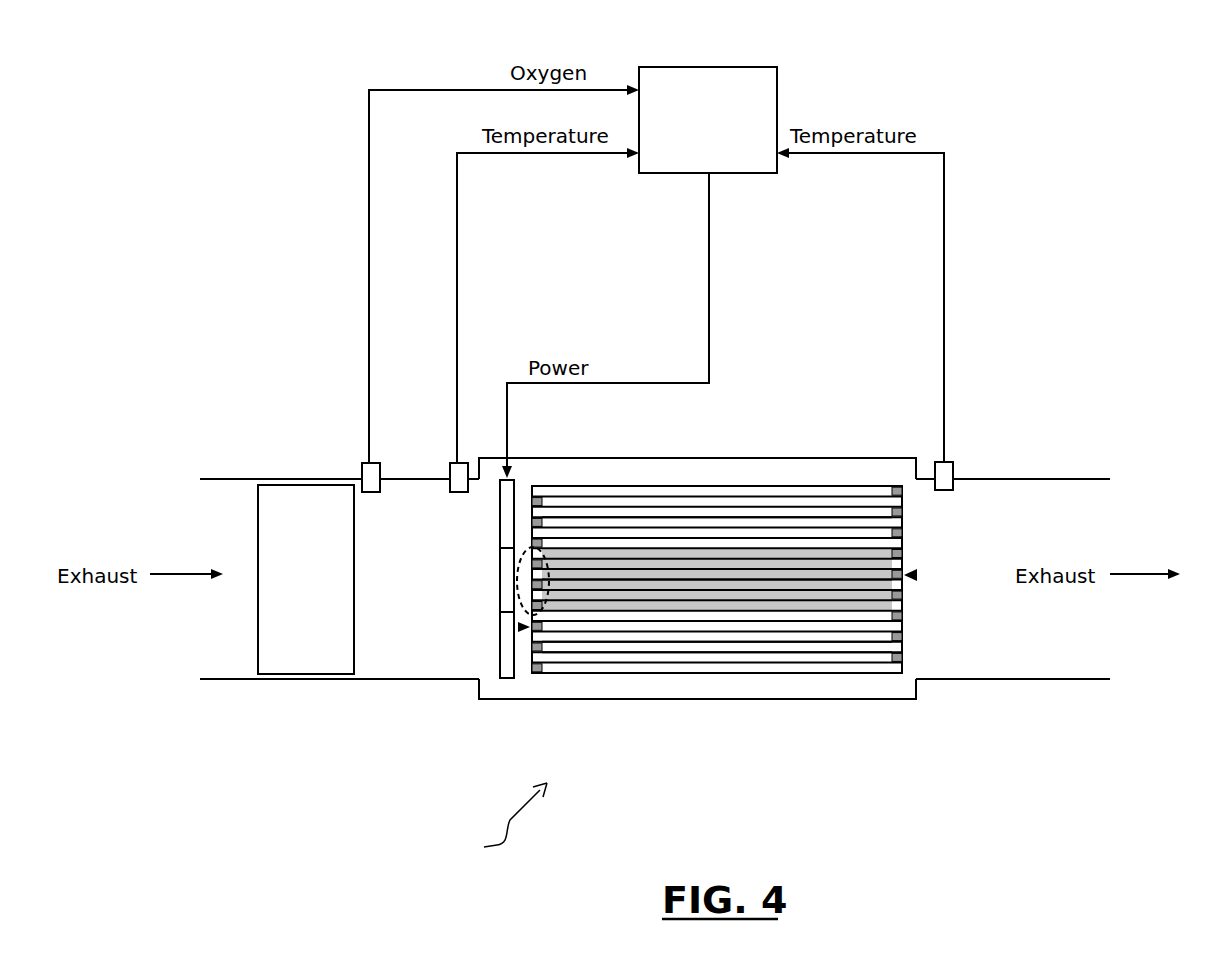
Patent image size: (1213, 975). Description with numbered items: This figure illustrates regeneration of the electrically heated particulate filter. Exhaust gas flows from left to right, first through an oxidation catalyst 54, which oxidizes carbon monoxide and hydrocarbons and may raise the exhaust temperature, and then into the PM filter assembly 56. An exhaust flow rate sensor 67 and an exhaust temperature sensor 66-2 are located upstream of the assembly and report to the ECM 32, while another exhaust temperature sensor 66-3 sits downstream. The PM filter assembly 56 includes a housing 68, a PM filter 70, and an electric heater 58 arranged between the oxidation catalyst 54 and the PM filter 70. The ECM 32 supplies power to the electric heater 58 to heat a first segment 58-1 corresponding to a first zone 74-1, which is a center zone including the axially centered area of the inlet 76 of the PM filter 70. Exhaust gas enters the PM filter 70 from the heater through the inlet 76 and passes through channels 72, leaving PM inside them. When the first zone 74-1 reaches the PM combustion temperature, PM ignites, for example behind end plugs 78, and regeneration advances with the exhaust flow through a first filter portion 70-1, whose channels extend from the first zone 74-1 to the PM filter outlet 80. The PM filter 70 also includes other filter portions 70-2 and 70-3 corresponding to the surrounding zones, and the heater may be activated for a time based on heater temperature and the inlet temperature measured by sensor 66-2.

The ECM 32 is at (710, 67).
The oxidation catalyst 54 is at (305, 648).
The PM filter assembly 56 is at (501, 820).
The electric heater 58 is at (465, 610).
The first segment 58-1 is at (505, 562).
The exhaust temperature sensor 66-2 is at (459, 462).
The exhaust temperature sensor 66-3 is at (946, 462).
The exhaust flow rate sensor 67 is at (368, 462).
The housing 68 is at (712, 458).
The PM filter 70 is at (731, 594).
The first filter portion 70-1 is at (607, 580).
The filter portion 70-2 is at (797, 515).
The filter portion 70-3 is at (838, 645).
The channels 72 is at (617, 645).
The first zone 74-1 is at (527, 547).
The inlet 76 is at (520, 627).
The end plugs 78 is at (533, 602).
The PM filter outlet 80 is at (912, 575).